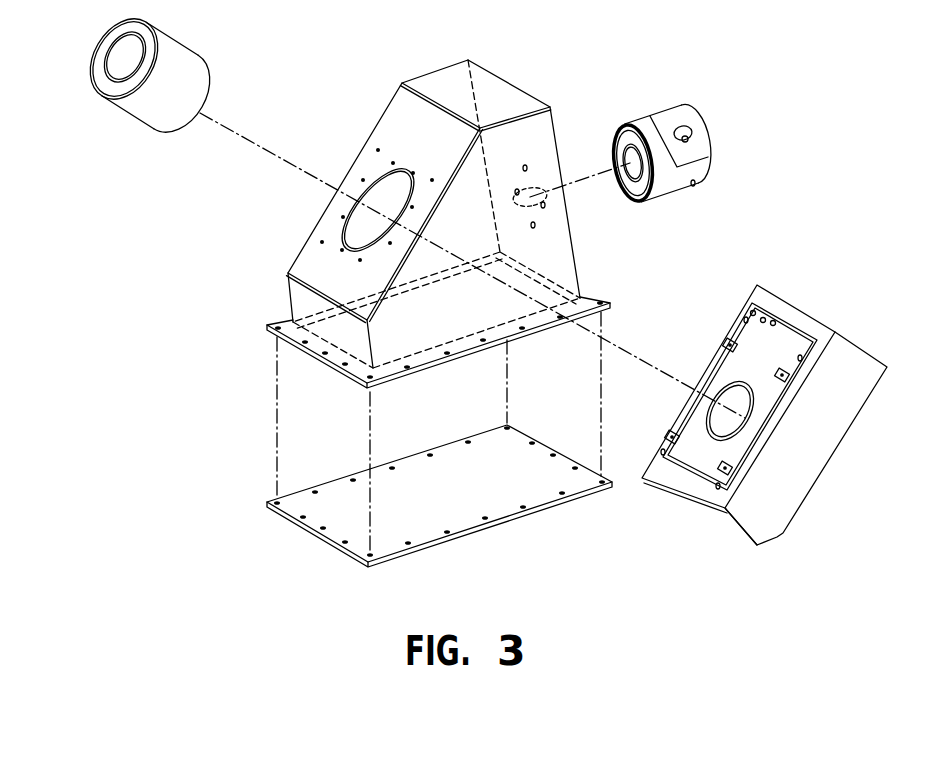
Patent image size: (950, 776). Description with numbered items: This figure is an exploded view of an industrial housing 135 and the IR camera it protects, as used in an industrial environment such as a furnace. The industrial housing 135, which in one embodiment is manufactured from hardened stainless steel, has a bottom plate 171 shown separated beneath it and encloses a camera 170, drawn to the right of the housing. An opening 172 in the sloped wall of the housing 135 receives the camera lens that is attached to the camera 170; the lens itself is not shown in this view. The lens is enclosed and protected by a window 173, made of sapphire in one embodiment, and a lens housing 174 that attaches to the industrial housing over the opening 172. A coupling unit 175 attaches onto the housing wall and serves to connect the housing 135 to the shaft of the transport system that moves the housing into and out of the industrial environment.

The industrial housing 135 is at (508, 81).
The camera 170 is at (833, 452).
The bottom plate 171 is at (497, 508).
The opening 172 is at (352, 228).
The window 173 is at (118, 63).
The lens housing 174 is at (128, 118).
The coupling unit 175 is at (672, 192).